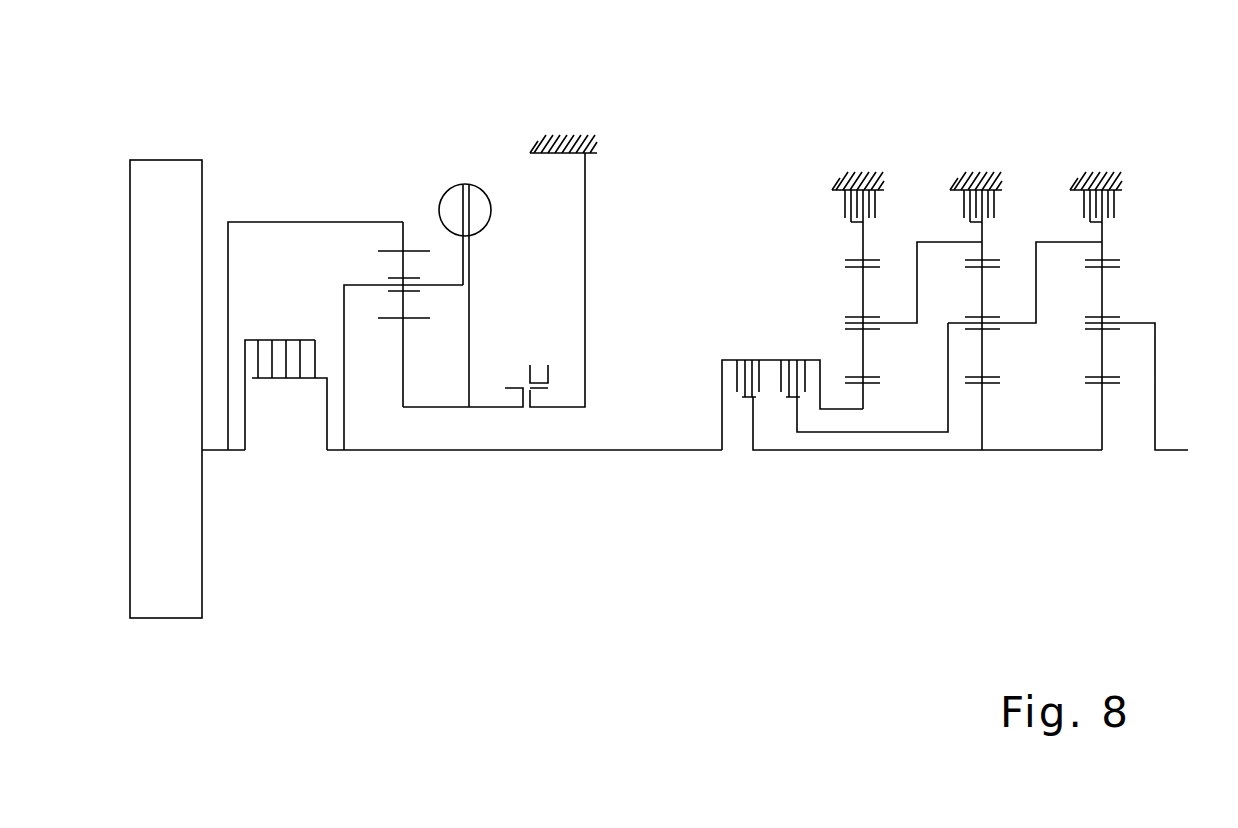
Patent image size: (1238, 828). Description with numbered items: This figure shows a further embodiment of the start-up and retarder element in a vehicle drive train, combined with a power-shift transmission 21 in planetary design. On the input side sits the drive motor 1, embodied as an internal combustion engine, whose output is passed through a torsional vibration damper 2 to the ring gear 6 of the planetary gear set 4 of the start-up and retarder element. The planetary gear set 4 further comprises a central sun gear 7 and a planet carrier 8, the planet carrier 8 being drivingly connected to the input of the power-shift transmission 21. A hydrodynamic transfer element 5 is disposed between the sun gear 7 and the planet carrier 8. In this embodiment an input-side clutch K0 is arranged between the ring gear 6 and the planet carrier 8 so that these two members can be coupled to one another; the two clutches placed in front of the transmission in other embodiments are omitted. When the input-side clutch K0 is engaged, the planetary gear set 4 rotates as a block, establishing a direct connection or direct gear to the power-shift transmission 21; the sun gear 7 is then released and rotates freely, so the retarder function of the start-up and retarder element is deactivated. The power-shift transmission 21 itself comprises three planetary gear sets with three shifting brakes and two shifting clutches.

The drive motor 1 is at (140, 158).
The torsional vibration damper 2 is at (188, 158).
The planetary gear set 4 is at (397, 213).
The hydrodynamic transfer element 5 is at (463, 184).
The ring gear 6 is at (398, 237).
The sun gear 7 is at (403, 367).
The planet carrier 8 is at (372, 287).
The power-shift transmission 21 is at (1054, 172).
The input-side clutch K0 is at (278, 380).